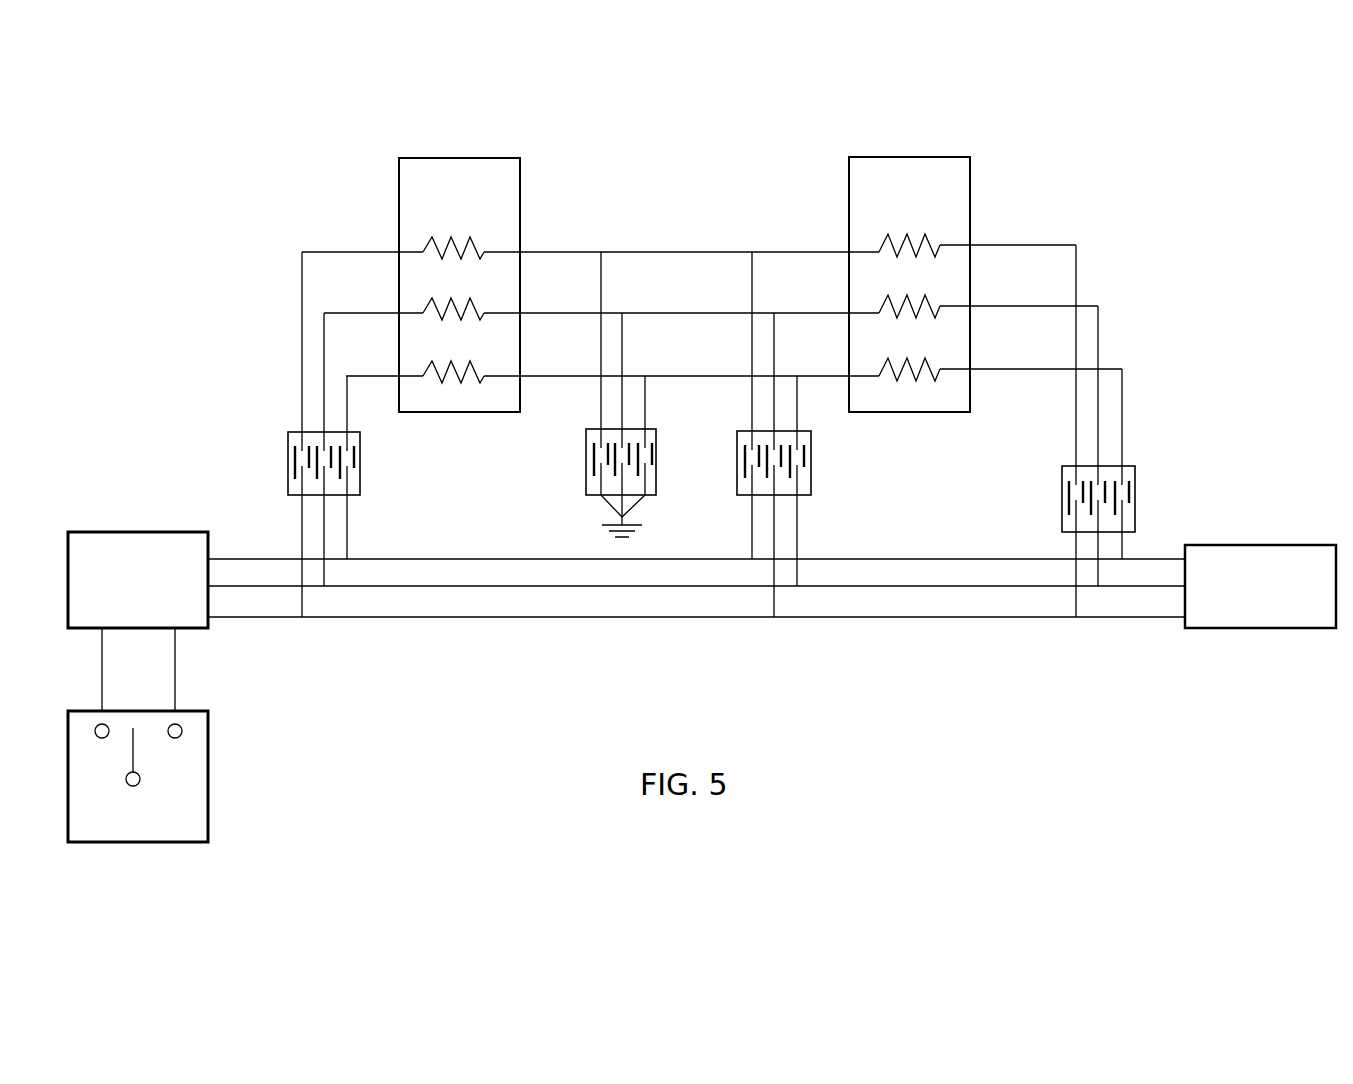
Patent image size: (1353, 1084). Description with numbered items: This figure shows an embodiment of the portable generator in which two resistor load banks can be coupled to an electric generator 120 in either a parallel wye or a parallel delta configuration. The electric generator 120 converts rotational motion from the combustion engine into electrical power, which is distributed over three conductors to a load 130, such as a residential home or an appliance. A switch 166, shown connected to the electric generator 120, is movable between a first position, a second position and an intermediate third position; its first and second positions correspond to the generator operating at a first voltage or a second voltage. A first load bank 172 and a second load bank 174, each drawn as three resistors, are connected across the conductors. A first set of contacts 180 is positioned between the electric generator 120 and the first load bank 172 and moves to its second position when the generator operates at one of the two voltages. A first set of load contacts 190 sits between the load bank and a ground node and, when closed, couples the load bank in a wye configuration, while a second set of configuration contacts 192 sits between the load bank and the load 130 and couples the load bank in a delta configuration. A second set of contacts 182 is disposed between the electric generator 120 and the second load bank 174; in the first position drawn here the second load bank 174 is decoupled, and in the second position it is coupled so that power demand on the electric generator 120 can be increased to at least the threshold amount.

The electric generator 120 is at (138, 580).
The load 130 is at (1260, 586).
The switch 166 is at (138, 776).
The first load bank 172 is at (459, 285).
The second load bank 174 is at (909, 284).
The first set of contacts 180 is at (285, 453).
The second set of contacts 182 is at (1141, 474).
The first set of load contacts 190 is at (580, 456).
The second set of configuration contacts 192 is at (815, 459).